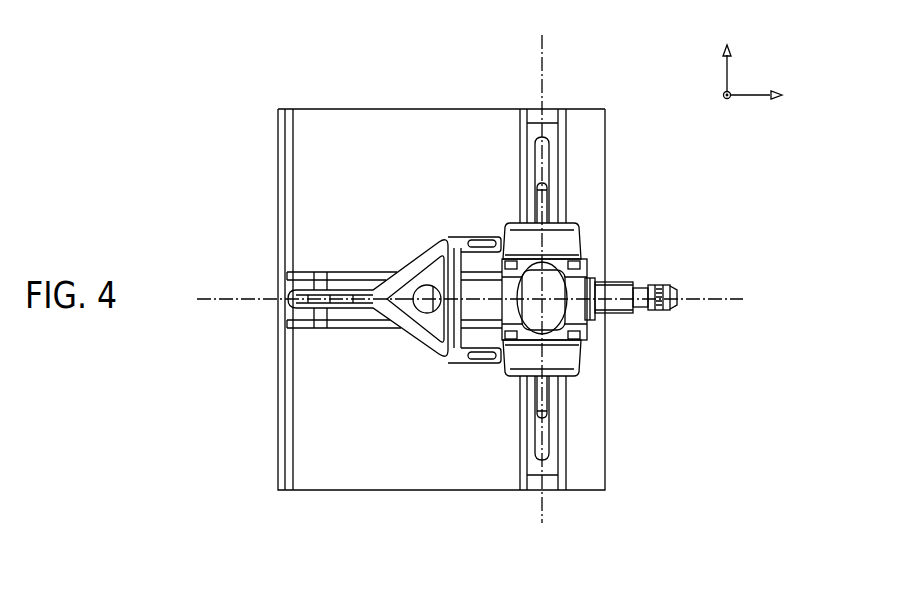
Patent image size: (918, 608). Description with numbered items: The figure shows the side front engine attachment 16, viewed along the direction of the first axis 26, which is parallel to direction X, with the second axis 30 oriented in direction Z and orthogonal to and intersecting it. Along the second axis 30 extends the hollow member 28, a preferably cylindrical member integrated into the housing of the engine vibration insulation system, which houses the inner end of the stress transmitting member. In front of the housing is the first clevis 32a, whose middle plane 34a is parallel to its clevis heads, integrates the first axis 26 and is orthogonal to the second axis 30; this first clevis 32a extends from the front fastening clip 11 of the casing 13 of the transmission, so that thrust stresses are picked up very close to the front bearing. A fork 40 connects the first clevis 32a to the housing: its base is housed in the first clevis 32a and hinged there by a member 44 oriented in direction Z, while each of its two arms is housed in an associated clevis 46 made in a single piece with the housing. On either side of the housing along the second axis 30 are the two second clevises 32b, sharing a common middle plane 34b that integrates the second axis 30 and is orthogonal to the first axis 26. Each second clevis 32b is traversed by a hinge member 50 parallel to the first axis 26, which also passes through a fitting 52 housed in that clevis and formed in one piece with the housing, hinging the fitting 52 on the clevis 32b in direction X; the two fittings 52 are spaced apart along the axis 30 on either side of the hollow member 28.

The front fastening clip 11 is at (278, 442).
The casing 13 is at (405, 128).
The side front engine attachment 16 is at (262, 523).
The first axis 26 is at (734, 298).
The hollow member 28 is at (553, 313).
The second axis 30 is at (544, 289).
The first clevis 32a is at (307, 287).
The second clevis 32b is at (562, 124).
The middle plane of the first clevis 34a is at (230, 302).
The middle plane of the second clevises 34b is at (545, 510).
The fork 40 is at (413, 260).
The hinge member 44 is at (322, 283).
The clevis 46 is at (485, 233).
The hinge member 50 is at (552, 208).
The fitting 52 is at (545, 190).